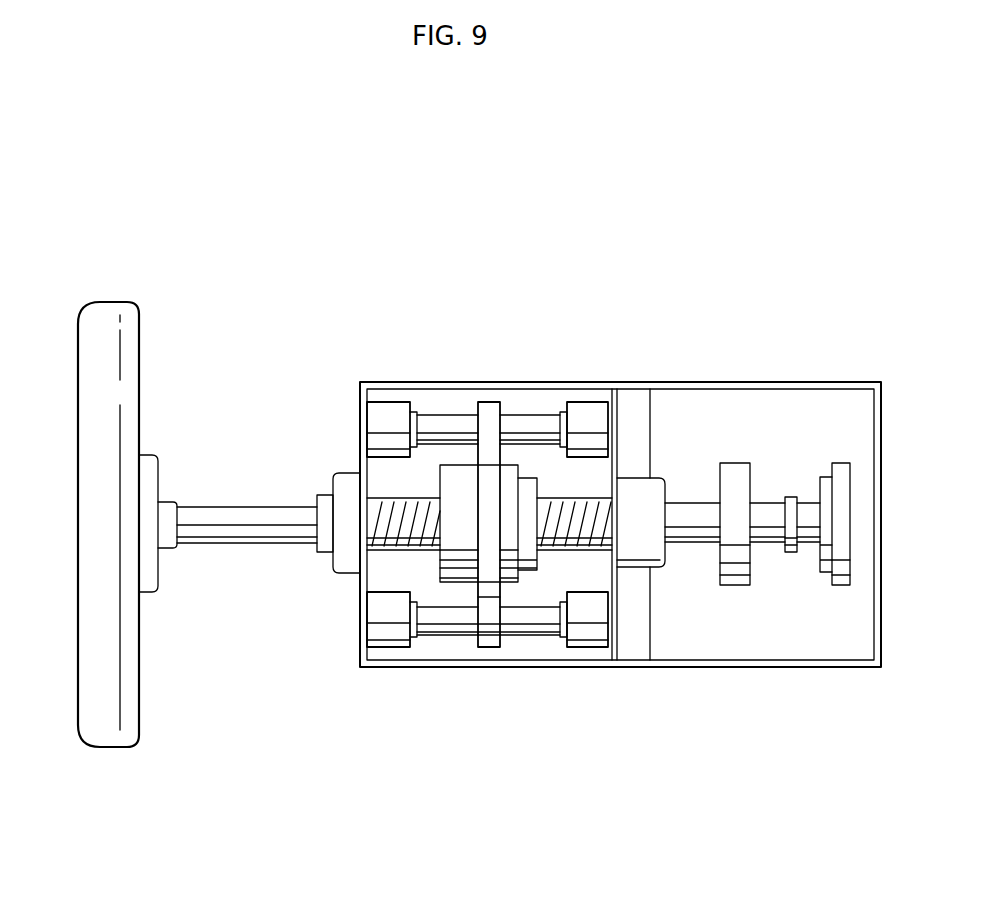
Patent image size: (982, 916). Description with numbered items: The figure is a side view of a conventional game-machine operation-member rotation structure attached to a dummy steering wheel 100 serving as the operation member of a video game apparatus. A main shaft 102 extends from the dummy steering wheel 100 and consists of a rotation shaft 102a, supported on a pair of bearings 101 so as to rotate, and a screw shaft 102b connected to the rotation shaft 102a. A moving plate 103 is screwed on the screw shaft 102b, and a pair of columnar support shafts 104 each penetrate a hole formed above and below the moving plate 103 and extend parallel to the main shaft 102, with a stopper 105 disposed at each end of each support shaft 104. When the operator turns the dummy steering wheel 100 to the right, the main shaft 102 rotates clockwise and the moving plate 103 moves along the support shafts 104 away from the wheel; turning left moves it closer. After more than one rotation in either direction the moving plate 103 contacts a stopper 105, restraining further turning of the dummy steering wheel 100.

The dummy steering wheel 100 is at (100, 308).
The bearings 101 is at (320, 550).
The main shaft 102 is at (437, 232).
The rotation shaft 102a is at (283, 515).
The screw shaft 102b is at (420, 495).
The moving plate 103 is at (490, 620).
The support shafts 104 is at (438, 425).
The stopper 105 is at (388, 425).